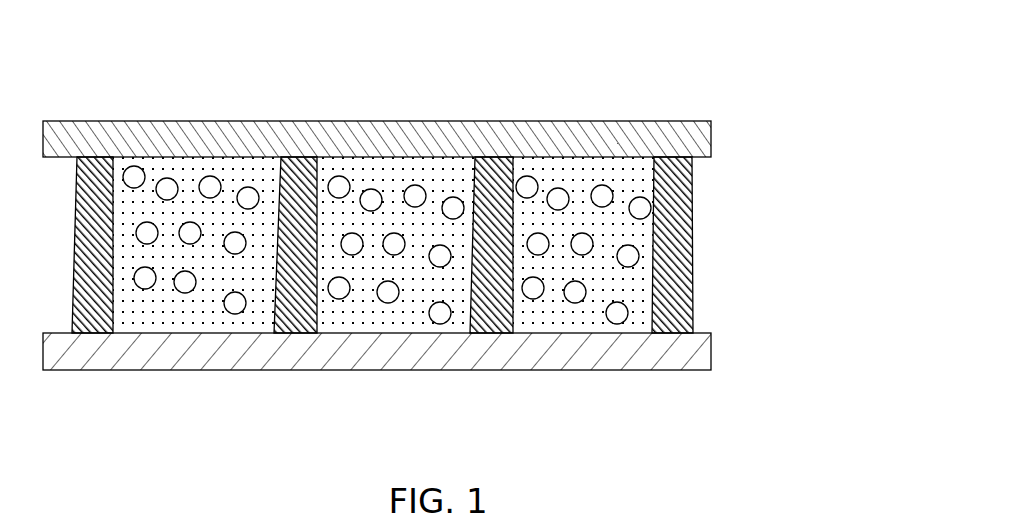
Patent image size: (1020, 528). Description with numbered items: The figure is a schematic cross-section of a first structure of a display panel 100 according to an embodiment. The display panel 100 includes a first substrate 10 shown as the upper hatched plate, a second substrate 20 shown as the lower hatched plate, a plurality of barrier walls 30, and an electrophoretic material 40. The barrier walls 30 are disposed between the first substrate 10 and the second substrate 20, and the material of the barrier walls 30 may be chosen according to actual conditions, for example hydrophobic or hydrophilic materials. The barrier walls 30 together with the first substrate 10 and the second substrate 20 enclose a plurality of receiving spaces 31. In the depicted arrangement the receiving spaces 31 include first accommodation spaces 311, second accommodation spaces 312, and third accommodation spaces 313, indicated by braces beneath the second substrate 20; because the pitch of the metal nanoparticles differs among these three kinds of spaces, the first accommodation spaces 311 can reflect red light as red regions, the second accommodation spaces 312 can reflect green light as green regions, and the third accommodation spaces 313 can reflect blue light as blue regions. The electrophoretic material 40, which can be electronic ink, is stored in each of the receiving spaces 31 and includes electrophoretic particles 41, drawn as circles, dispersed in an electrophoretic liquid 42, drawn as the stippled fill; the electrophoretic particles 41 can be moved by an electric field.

The display panel 100 is at (663, 73).
The first substrate 10 is at (673, 138).
The second substrate 20 is at (683, 356).
The barrier walls 30 is at (673, 183).
The receiving spaces 31 is at (463, 298).
The first accommodation spaces 311 is at (117, 370).
The second accommodation spaces 312 is at (317, 370).
The third accommodation spaces 313 is at (513, 370).
The electrophoretic material 40 is at (463, 245).
The electrophoretic particles 41 is at (639, 248).
The electrophoretic liquid 42 is at (637, 276).